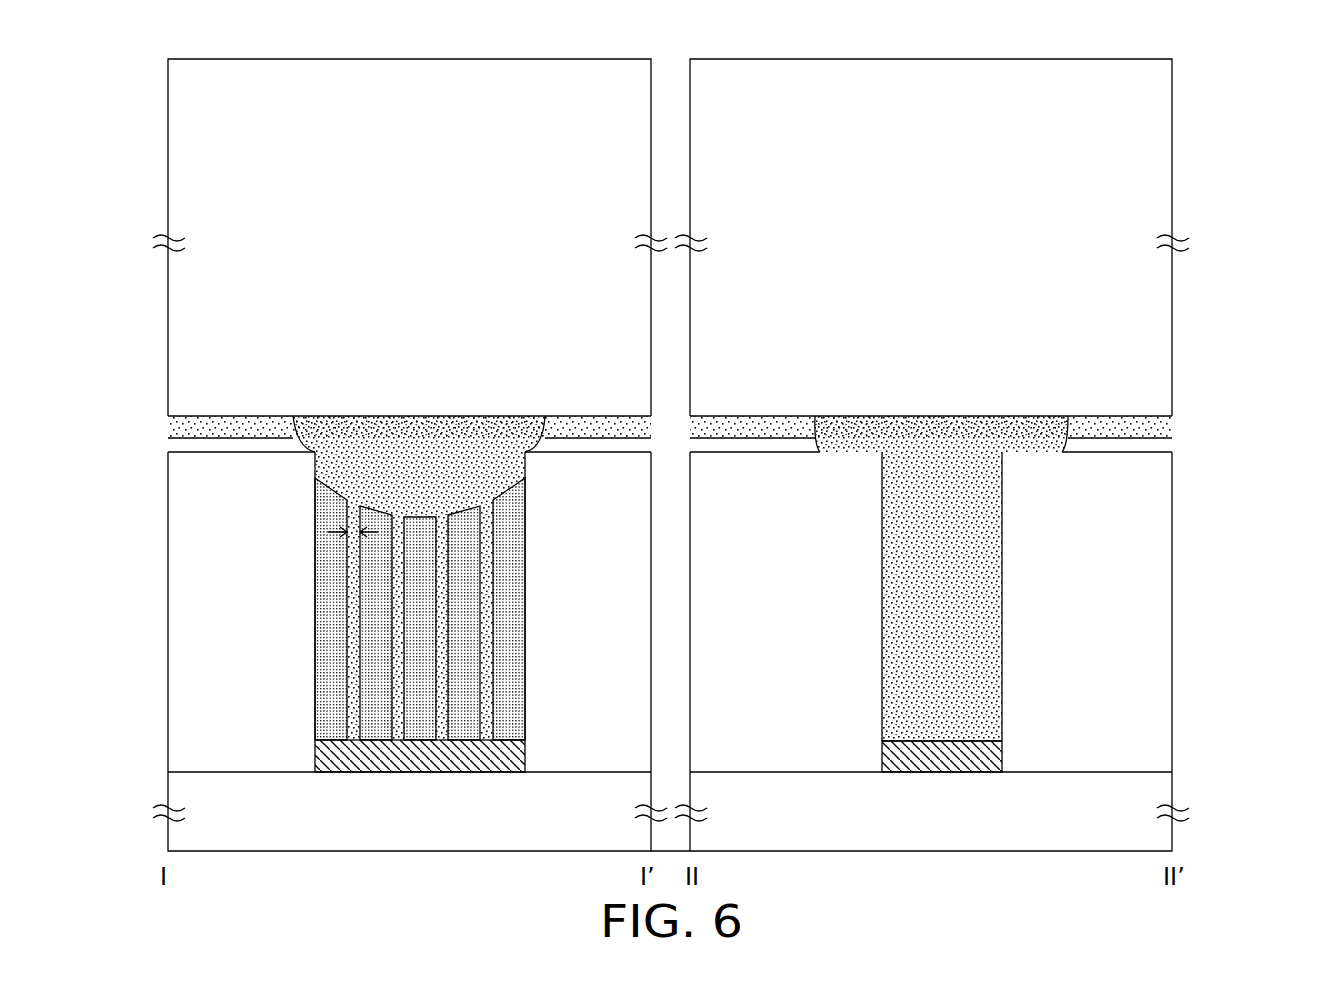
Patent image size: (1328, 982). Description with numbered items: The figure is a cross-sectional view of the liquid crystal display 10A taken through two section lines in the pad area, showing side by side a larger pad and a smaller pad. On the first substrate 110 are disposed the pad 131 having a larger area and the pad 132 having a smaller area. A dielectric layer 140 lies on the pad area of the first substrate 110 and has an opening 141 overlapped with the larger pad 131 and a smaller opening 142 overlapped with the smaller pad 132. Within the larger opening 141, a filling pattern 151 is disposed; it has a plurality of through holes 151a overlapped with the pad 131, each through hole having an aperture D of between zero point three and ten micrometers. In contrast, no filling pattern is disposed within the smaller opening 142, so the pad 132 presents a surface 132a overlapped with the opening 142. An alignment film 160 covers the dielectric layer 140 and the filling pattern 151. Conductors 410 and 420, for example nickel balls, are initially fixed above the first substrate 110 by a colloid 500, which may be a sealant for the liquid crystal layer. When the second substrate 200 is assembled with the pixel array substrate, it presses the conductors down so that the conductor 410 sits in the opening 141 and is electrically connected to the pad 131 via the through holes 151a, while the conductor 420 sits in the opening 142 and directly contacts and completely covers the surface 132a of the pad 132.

The liquid crystal display 10A is at (1308, 904).
The first substrate 110 is at (237, 842).
The pad 131 is at (419, 762).
The pad 132 is at (970, 765).
The surface 132a is at (941, 728).
The dielectric layer 140 is at (175, 614).
The opening 141 is at (304, 596).
The opening 142 is at (1014, 602).
The filling pattern 151 is at (377, 732).
The through holes 151a is at (360, 688).
The aperture D is at (350, 535).
The alignment film 160 is at (315, 495).
The second substrate 200 is at (175, 169).
The conductor 410 is at (370, 440).
The conductor 420 is at (975, 440).
The colloid 500 is at (172, 421).